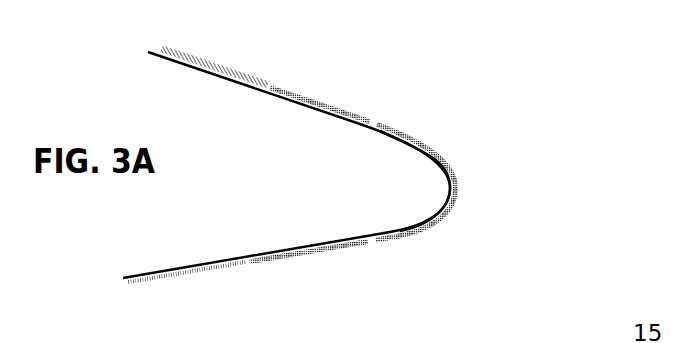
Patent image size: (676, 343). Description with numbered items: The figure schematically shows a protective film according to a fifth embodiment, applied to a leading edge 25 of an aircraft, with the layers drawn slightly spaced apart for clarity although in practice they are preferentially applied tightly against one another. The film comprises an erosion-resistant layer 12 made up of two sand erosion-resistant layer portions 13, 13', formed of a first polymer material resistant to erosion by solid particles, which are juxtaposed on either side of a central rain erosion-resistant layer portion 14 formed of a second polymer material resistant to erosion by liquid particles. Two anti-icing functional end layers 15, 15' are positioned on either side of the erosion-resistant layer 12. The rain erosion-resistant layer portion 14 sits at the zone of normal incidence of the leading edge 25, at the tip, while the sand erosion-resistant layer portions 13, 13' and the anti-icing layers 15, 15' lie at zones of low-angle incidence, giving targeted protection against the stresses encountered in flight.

The erosion-resistant layer 12 is at (416, 124).
The sand erosion-resistant layer portion 13 is at (343, 81).
The sand erosion-resistant layer portion 13' is at (328, 280).
The rain erosion-resistant layer portion 14 is at (453, 180).
The anti-icing functional end layer 15 is at (240, 47).
The anti-icing functional end layer 15' is at (228, 301).
The leading edge 25 is at (418, 162).